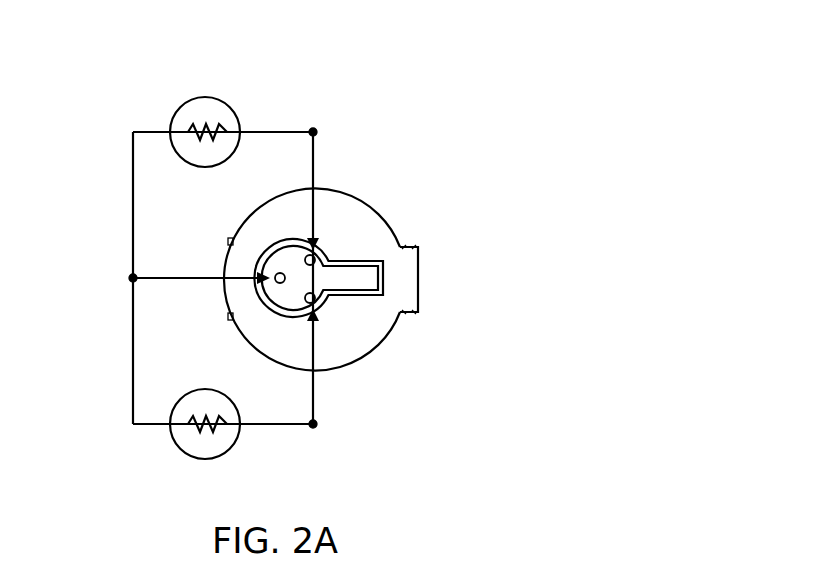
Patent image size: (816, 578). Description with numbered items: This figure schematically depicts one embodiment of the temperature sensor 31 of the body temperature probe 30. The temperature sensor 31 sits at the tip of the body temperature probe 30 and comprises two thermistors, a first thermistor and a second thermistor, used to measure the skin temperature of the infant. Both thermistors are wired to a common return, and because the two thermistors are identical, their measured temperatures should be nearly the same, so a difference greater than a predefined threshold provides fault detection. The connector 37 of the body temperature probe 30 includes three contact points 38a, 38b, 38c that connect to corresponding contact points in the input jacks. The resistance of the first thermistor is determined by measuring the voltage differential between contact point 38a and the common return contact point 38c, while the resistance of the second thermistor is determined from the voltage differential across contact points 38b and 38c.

The body temperature probe 30 is at (394, 51).
The temperature sensor 31 is at (92, 205).
The connector 37 is at (378, 230).
The contact point 38a is at (316, 259).
The contact point 38b is at (316, 301).
The contact point 38c is at (281, 285).